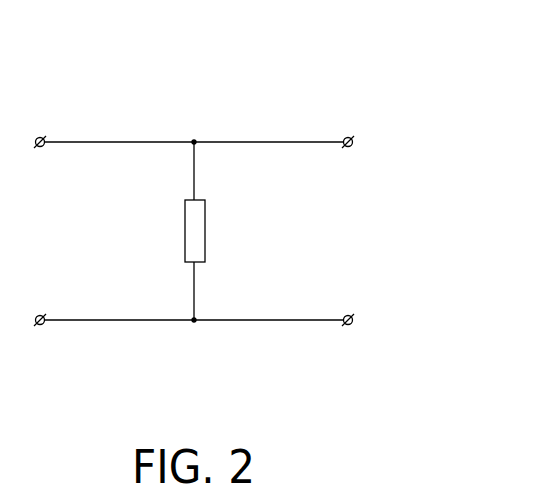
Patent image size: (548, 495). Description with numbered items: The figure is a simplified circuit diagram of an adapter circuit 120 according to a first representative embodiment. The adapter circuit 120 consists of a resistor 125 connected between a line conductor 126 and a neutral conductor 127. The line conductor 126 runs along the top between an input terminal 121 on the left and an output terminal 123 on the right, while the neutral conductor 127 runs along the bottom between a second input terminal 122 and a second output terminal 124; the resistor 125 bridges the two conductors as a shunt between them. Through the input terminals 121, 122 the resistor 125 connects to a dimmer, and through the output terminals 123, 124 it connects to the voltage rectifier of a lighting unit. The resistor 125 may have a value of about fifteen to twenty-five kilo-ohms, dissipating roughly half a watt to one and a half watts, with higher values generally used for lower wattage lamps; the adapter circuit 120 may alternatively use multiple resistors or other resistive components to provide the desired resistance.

The adapter circuit 120 is at (422, 90).
The input terminal 121 is at (38, 137).
The input terminal 122 is at (42, 325).
The output terminal 123 is at (347, 137).
The output terminal 124 is at (350, 325).
The resistor 125 is at (205, 228).
The line conductor 126 is at (272, 141).
The neutral conductor 127 is at (280, 321).